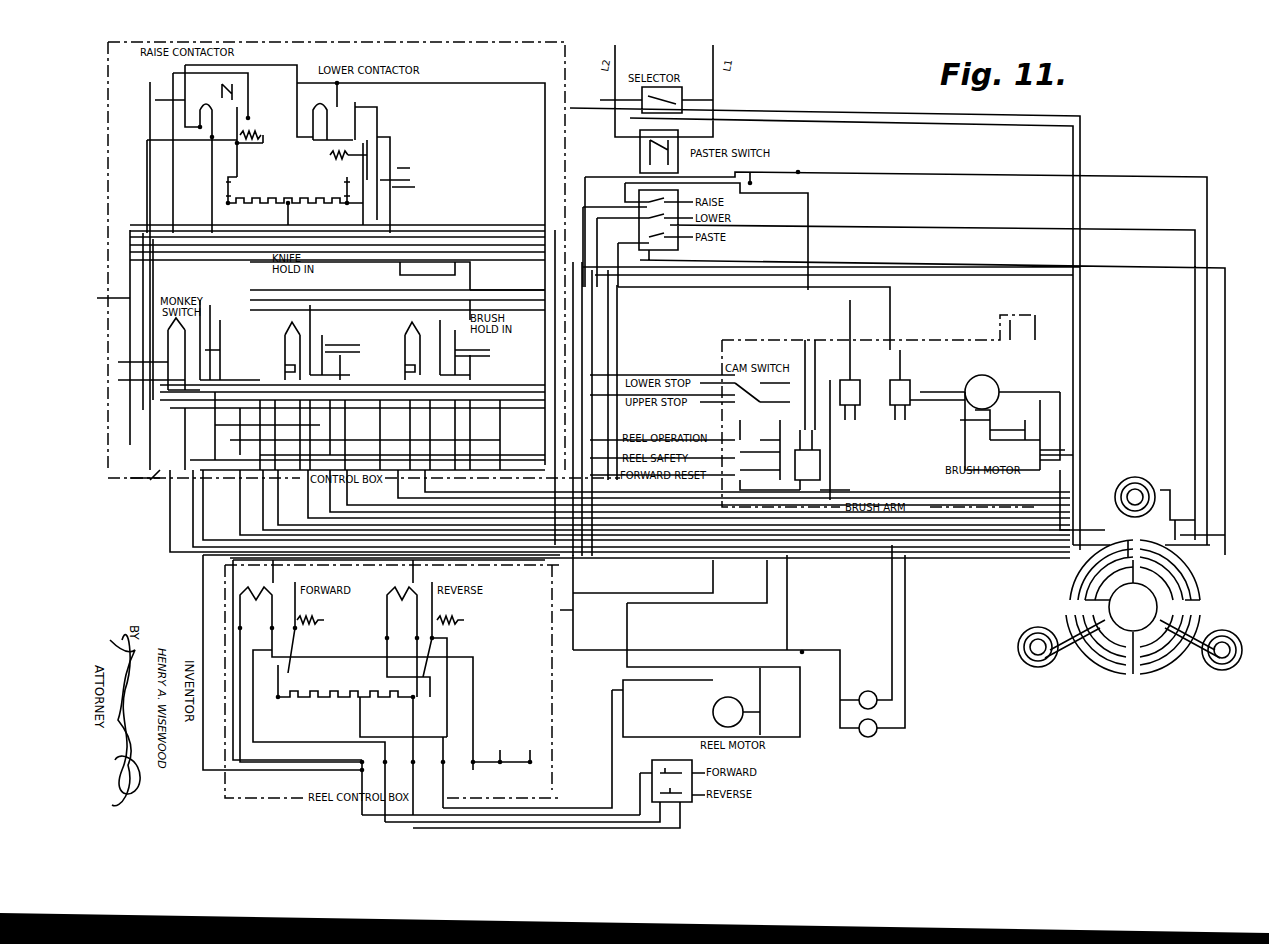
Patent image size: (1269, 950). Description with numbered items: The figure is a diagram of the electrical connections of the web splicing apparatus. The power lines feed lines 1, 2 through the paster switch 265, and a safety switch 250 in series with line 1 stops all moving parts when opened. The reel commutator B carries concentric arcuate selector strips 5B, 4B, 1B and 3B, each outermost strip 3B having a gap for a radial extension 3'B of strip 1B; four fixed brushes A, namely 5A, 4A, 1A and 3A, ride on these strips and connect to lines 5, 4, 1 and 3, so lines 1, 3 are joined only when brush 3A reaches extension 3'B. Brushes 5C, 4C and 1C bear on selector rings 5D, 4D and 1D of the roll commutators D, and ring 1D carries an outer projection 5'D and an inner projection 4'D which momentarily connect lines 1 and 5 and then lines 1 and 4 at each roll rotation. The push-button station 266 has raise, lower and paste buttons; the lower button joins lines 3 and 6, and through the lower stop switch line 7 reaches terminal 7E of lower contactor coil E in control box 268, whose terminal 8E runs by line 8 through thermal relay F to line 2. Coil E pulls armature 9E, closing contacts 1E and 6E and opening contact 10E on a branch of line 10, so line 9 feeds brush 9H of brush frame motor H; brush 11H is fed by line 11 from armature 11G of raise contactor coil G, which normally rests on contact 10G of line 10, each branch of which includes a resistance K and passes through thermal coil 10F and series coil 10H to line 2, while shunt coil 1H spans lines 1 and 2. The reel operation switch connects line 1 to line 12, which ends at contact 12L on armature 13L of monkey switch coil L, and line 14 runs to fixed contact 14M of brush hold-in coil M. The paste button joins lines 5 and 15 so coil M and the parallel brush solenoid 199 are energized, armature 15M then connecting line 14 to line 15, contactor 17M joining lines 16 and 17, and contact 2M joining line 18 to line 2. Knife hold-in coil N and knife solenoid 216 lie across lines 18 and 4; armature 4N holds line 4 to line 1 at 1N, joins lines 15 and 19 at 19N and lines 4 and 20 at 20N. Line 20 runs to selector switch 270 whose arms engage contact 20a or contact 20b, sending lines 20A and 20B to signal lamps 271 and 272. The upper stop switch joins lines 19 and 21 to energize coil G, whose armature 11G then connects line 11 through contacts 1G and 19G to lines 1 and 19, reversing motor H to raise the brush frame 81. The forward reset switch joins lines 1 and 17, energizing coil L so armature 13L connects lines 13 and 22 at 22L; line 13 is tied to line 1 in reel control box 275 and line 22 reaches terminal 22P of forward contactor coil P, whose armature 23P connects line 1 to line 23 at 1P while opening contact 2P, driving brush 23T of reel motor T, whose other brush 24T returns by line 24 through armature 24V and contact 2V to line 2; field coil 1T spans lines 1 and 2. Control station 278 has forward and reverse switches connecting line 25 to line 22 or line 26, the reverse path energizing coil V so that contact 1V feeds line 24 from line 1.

The line 1 is at (545, 465).
The line 2 is at (566, 462).
The line 3 is at (999, 302).
The line 4 is at (773, 444).
The line 5 is at (933, 375).
The line 6 is at (468, 291).
The line 7 is at (504, 308).
The line 8 is at (200, 207).
The line 9 is at (513, 335).
The line 10 is at (586, 368).
The line 11 is at (595, 334).
The line 12 is at (557, 442).
The line 13 is at (489, 573).
The line 14 is at (234, 271).
The line 15 is at (649, 351).
The line 16 is at (251, 361).
The line 17 is at (526, 474).
The line 18 is at (569, 389).
The line 19 is at (173, 170).
The line 20 is at (459, 293).
The line 21 is at (212, 183).
The line 22 is at (415, 573).
The line 23 is at (461, 723).
The line 24 is at (552, 696).
The line 25 is at (731, 632).
The line 26 is at (549, 790).
The contact 1G is at (222, 84).
The raise contactor coil G is at (203, 99).
The contact 19G is at (268, 94).
The armature 11G is at (259, 145).
The contact 10G is at (237, 185).
The lower contactor coil E is at (322, 94).
The contact 1E is at (374, 91).
The contact 6E is at (402, 101).
The terminal 8E is at (288, 141).
The terminal 7E is at (302, 155).
The armature 9E is at (318, 165).
The contact 10E is at (318, 181).
The resistance K is at (295, 212).
The contact 1N is at (355, 261).
The armature 4N is at (365, 274).
The thermal coil 10F is at (442, 262).
The thermal relay F is at (480, 267).
The contact 22L is at (204, 271).
The movable contact 12L is at (232, 299).
The armature 13L is at (232, 354).
The monkey switch coil L is at (173, 324).
The knife hold-in coil N is at (293, 344).
The contact 19N is at (379, 326).
The contact 20N is at (345, 371).
The brush hold-in coil M is at (408, 324).
The fixed contact 14M is at (450, 289).
The contactor 17M is at (496, 332).
The contact 2M is at (502, 344).
The armature 15M is at (506, 357).
The control box 268 is at (112, 494).
The selector switch 270 is at (700, 85).
The paster switch 265 is at (690, 145).
The push-button station 266 is at (680, 250).
The brush frame 81 is at (938, 314).
The knife solenoid 216 is at (844, 419).
The brush solenoid 199 is at (924, 394).
The safety switch 250 is at (852, 484).
The brush 9H is at (953, 369).
The brush 11H is at (1017, 369).
The series coil 10H is at (981, 417).
The shunt coil 1H is at (989, 437).
The brush frame motor H is at (982, 392).
The roll commutator D is at (1136, 566).
The selector ring 4D is at (1101, 560).
The inner projection 4'D is at (1098, 520).
The brush 4C is at (1130, 582).
The selector ring 1D is at (1125, 579).
The brush 1C is at (1135, 598).
The selector ring 5D is at (1113, 591).
The outer projection 5'D is at (1093, 554).
The brush 3A is at (1176, 514).
The brush 5C is at (1139, 609).
The brush 1A is at (1236, 544).
The brush 4A is at (1130, 589).
The brush 5A is at (1135, 609).
The selector strip 3B is at (1093, 679).
The reel commutator B is at (1080, 709).
The selector strip 1B is at (1120, 705).
The selector strip 5B is at (1146, 699).
The selector strip 4B is at (1170, 679).
The radial extension 3'B is at (1206, 689).
The fixed brushes A is at (1232, 465).
The reel control box 275 is at (225, 580).
The terminal 22P is at (240, 628).
The forward contactor coil P is at (256, 579).
The contact 1P is at (290, 584).
The armature 23P is at (320, 604).
The contact 2P is at (285, 676).
The reverse contactor coil V is at (402, 589).
The contact 1V is at (432, 584).
The armature 24V is at (471, 604).
The contact 2V is at (404, 644).
The brush 23T is at (693, 694).
The brush 24T is at (693, 721).
The field coil 1T is at (774, 709).
The reel motor T is at (727, 712).
The signal lamp 271 is at (872, 671).
The signal lamp 272 is at (872, 744).
The control station 278 is at (739, 804).
The contact 20a is at (642, 100).
The contact 20b is at (682, 100).
The line 20A is at (890, 650).
The line 20B is at (905, 650).